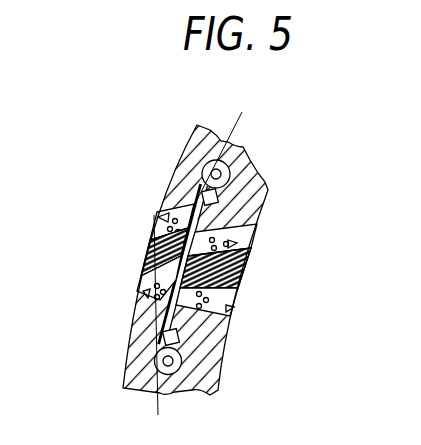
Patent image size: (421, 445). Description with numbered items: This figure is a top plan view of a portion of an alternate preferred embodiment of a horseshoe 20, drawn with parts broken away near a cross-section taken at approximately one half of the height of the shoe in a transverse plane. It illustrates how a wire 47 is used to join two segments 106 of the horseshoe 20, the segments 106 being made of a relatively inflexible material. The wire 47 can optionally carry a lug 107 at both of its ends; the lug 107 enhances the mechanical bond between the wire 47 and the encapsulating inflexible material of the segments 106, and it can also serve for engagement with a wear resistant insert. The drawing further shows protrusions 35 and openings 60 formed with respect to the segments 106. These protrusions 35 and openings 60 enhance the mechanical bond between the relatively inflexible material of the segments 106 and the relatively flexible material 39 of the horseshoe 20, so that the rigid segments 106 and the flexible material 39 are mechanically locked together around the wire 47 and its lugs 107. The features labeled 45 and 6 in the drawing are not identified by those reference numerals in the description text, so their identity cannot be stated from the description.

The horseshoe 20 is at (158, 165).
The segments 106 is at (187, 147).
The lug 107 is at (263, 203).
The openings 60 is at (158, 213).
The first intumescent strip 45 is at (147, 252).
The wire 47 is at (137, 278).
The relatively flexible material 39 is at (217, 277).
The protrusions 35 is at (228, 316).
The section line 6- 6 is at (237, 113).